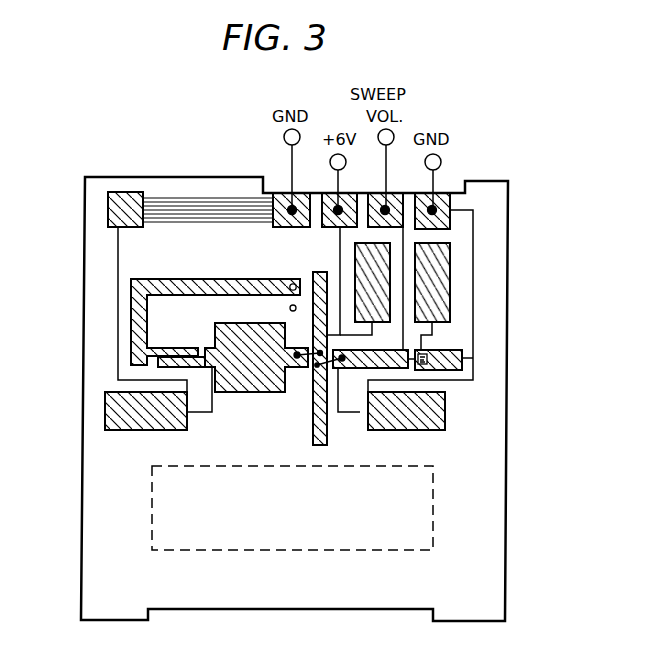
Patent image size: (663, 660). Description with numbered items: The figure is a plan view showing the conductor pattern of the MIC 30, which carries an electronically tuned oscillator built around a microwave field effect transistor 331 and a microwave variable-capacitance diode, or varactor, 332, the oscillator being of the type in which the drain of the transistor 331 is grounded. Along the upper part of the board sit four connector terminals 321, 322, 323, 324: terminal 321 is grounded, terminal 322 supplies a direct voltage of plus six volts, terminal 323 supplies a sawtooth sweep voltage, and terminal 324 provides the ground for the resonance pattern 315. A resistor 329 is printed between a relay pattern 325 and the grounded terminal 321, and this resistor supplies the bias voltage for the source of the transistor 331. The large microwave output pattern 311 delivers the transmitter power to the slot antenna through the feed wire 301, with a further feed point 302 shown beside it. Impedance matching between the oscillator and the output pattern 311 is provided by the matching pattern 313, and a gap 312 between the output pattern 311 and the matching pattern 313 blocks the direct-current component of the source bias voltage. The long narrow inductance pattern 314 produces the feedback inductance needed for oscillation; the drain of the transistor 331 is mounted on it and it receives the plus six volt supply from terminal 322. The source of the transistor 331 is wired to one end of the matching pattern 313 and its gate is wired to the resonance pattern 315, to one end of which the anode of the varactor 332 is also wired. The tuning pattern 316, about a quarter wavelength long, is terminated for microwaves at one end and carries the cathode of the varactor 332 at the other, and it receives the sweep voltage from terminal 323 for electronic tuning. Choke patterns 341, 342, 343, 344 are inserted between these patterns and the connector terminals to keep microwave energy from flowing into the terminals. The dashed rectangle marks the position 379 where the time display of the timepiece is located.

The MIC 30 is at (505, 605).
The feed wire 301 is at (291, 283).
The through hole 302 is at (290, 308).
The microwave output pattern 311 is at (131, 312).
The gap 312 is at (158, 364).
The matching pattern 313 is at (252, 393).
The inductance pattern 314 is at (312, 446).
The resonance pattern 315 is at (361, 413).
The tuning pattern 316 is at (462, 359).
The connector terminal 321 is at (298, 196).
The connector terminal 322 is at (348, 196).
The connector terminal 323 is at (395, 196).
The connector terminal 324 is at (440, 193).
The relay pattern 325 is at (135, 194).
The resistor 329 is at (222, 198).
The microwave field effect transistor 331 is at (322, 368).
The microwave variable-capacitance diode 332 is at (428, 368).
The choke pattern 341 is at (130, 424).
The choke pattern 342 is at (435, 432).
The choke pattern 343 is at (372, 323).
The choke pattern 344 is at (450, 317).
The position 379 is at (152, 513).